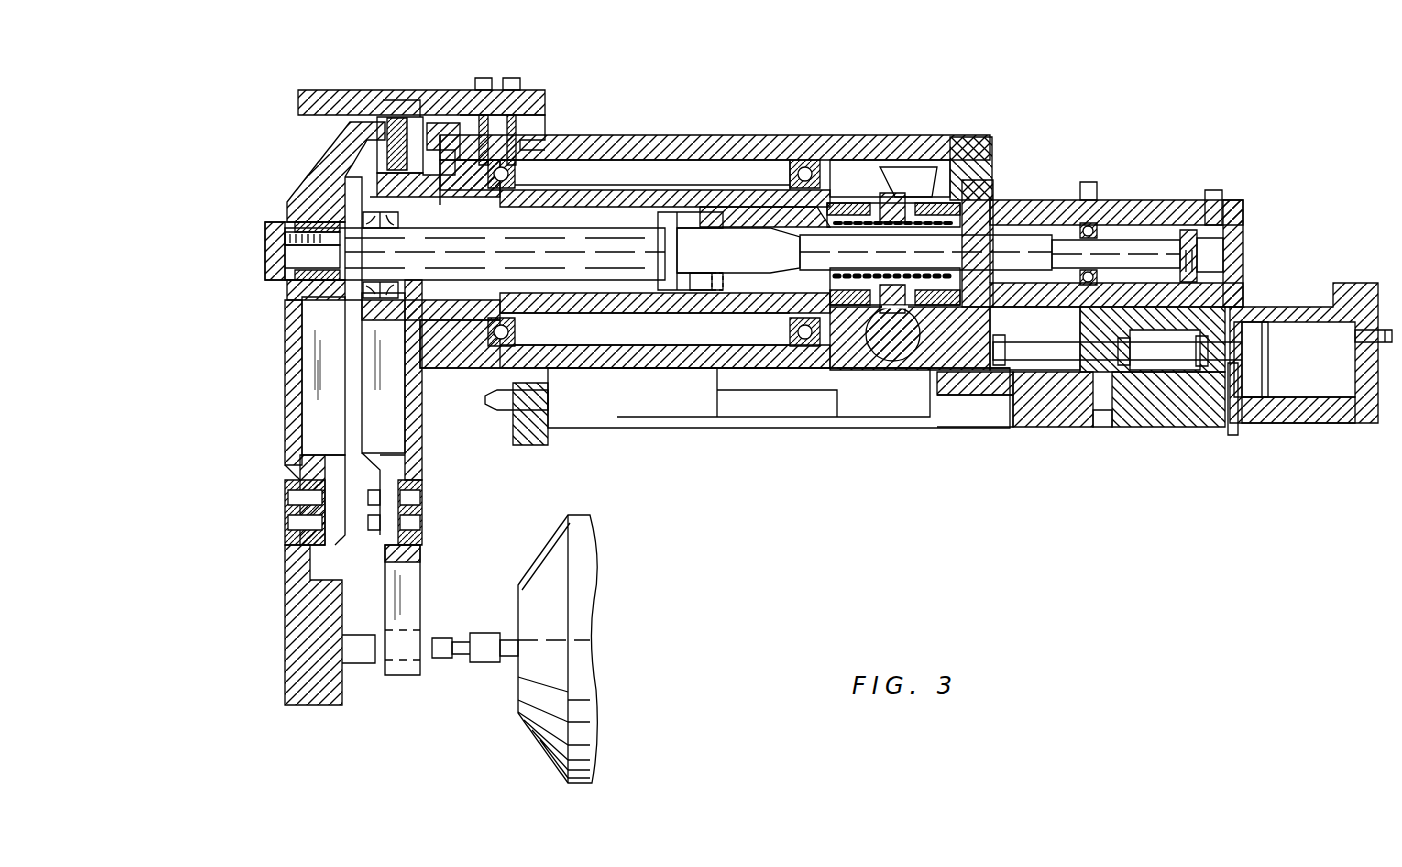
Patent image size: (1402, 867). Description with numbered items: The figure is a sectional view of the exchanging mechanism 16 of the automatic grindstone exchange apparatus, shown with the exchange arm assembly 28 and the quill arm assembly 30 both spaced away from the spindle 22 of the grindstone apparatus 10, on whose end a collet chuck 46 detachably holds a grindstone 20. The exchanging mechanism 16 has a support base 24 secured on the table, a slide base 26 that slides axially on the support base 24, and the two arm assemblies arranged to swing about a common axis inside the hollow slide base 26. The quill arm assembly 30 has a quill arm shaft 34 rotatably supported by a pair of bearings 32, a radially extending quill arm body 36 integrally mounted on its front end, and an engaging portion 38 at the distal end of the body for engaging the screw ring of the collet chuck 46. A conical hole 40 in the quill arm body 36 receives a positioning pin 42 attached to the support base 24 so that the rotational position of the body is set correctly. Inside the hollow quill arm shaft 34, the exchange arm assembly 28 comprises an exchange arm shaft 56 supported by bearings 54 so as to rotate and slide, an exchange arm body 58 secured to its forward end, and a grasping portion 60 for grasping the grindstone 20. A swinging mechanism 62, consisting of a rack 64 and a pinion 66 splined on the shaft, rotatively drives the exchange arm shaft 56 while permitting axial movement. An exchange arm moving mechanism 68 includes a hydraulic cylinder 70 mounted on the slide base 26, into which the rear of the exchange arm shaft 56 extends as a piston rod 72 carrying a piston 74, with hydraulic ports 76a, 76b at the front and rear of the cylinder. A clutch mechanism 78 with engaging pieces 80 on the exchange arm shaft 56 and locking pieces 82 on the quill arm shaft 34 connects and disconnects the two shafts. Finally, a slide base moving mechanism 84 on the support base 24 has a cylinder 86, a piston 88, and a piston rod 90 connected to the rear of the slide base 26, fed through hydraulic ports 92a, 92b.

The grindstone apparatus 10 is at (600, 588).
The exchanging mechanism 16 is at (878, 130).
The grindstone 20 is at (442, 645).
The spindle 22 is at (510, 656).
The support base 24 is at (1056, 412).
The slide base 26 is at (972, 150).
The exchange arm assembly 28 is at (296, 198).
The quill arm assembly 30 is at (362, 196).
The bearings 32 is at (528, 160).
The quill arm shaft 34 is at (752, 205).
The quill arm body 36 is at (410, 470).
The engaging portion 38 is at (408, 590).
The conical hole 40 is at (420, 406).
The positioning pin 42 is at (515, 400).
The collet chuck 46 is at (482, 662).
The bearings 54 is at (430, 215).
The exchange arm shaft 56 is at (610, 235).
The exchange arm body 58 is at (290, 410).
The grasping portion 60 is at (320, 680).
The swinging mechanism 62 is at (902, 185).
The rack 64 is at (893, 345).
The pinion 66 is at (950, 185).
The exchange arm moving mechanism 68 is at (1172, 198).
The hydraulic cylinder 70 is at (1243, 244).
The piston rod 72 is at (1116, 255).
The piston 74 is at (1198, 232).
The hydraulic port 76a is at (1086, 198).
The hydraulic port 76b is at (1222, 195).
The clutch mechanism 78 is at (692, 210).
The engaging pieces 80 is at (693, 290).
The locking pieces 82 is at (718, 290).
The slide base moving mechanism 84 is at (1352, 425).
The cylinder 86 is at (1300, 418).
The piston 88 is at (1255, 380).
The piston rod 90 is at (1172, 360).
The hydraulic port 92a is at (1230, 437).
The hydraulic port 92b is at (1388, 328).